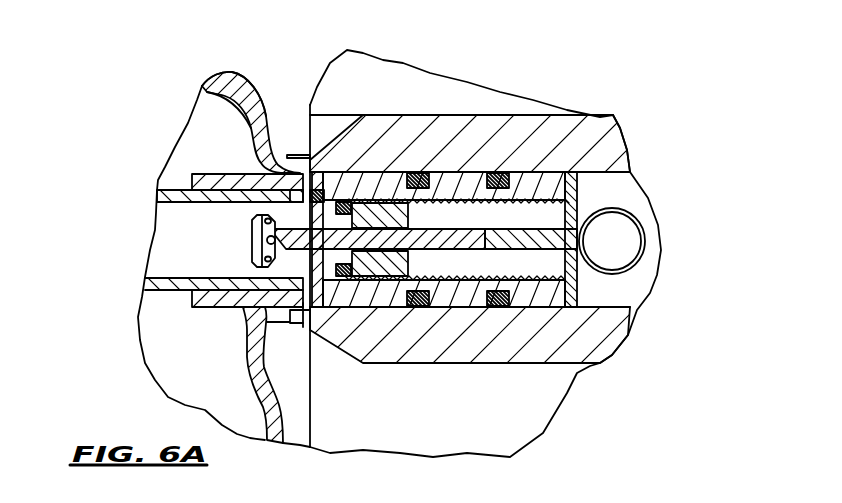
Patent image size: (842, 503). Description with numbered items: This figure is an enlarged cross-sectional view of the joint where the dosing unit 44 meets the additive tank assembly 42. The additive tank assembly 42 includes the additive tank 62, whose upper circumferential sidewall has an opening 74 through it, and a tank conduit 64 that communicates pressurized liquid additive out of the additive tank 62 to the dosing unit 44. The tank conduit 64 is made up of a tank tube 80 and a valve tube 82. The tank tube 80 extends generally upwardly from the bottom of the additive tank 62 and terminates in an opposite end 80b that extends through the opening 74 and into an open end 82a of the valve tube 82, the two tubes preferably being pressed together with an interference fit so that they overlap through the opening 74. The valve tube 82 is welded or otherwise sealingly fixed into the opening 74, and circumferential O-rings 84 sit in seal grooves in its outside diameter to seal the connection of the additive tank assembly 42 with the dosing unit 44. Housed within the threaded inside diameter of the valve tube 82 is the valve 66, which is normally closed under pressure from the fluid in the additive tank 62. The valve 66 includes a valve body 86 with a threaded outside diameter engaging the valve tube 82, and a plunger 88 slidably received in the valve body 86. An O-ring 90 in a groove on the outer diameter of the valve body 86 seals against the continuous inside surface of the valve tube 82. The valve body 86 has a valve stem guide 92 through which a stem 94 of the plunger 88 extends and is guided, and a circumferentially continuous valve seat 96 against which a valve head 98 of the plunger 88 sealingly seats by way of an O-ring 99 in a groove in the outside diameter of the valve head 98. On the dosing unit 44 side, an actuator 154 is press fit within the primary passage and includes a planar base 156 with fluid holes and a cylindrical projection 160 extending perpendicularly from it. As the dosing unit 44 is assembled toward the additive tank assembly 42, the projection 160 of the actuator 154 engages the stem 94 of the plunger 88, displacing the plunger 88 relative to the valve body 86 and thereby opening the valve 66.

The additive tank assembly 42 is at (258, 82).
The dosing unit 44 is at (450, 92).
The additive tank 62 is at (227, 83).
The tank conduit 64 is at (186, 169).
The valve 66 is at (472, 172).
The opening 74 is at (250, 167).
The tank tube 80 is at (165, 290).
The opposite end of tank tube 80b is at (306, 188).
The valve tube 82 is at (188, 181).
The open end of valve tube 82a is at (190, 307).
The O-rings 84 is at (490, 307).
The valve body 86 is at (390, 172).
The plunger 88 is at (302, 325).
The O-ring 90 is at (352, 307).
The valve stem guide 92 is at (424, 222).
The stem 94 is at (477, 238).
The valve seat 96 is at (316, 190).
The valve head 98 is at (250, 238).
The O-ring 99 is at (267, 217).
The actuator 154 is at (586, 205).
The planar base 156 is at (582, 274).
The cylindrical projection 160 is at (528, 237).